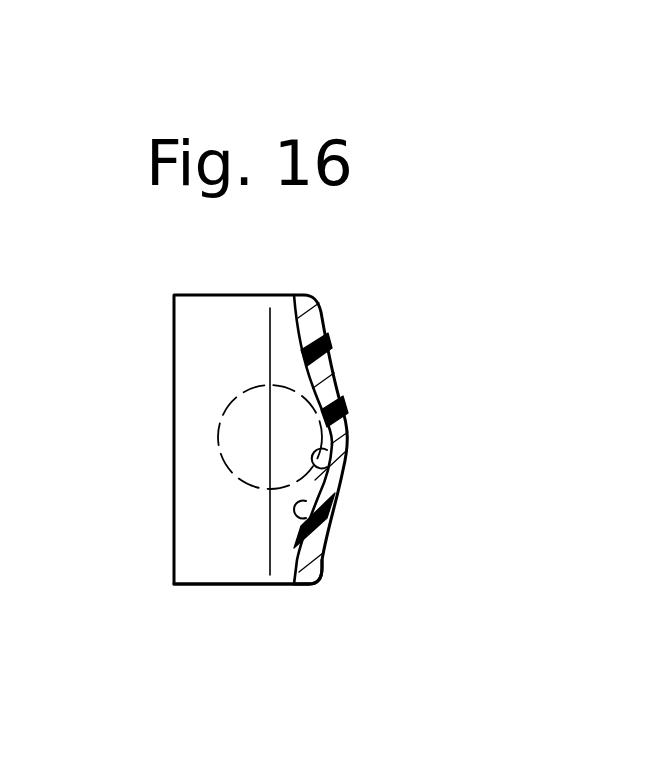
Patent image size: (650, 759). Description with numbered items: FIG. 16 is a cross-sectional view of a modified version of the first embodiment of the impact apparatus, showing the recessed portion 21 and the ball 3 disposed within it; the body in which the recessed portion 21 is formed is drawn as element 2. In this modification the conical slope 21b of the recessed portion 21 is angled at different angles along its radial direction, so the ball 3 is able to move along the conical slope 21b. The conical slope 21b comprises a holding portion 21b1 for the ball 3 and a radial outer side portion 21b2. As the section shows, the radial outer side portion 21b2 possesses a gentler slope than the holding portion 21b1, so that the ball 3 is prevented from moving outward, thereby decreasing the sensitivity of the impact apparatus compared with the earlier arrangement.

The recessed portion 21 is at (193, 350).
The ball 3 is at (232, 455).
The conical slope 21b is at (323, 528).
The holding portion 21b1 is at (316, 464).
The radial outer side portion 21b2 is at (287, 563).
The base 2 is at (203, 588).